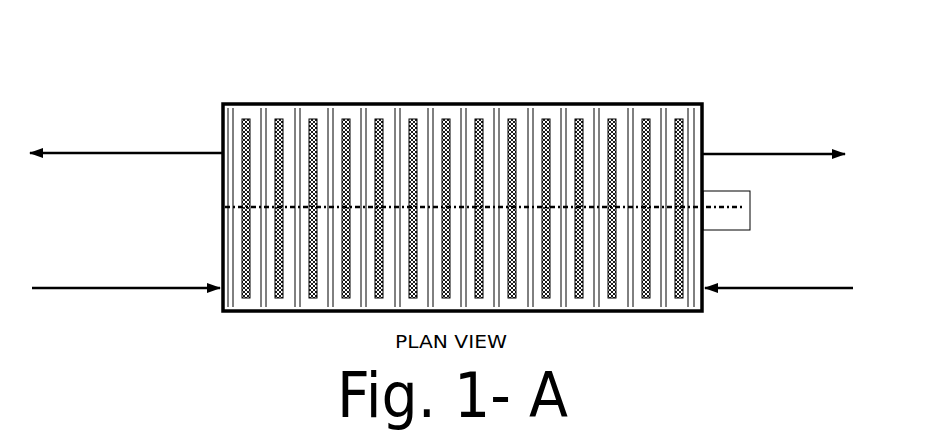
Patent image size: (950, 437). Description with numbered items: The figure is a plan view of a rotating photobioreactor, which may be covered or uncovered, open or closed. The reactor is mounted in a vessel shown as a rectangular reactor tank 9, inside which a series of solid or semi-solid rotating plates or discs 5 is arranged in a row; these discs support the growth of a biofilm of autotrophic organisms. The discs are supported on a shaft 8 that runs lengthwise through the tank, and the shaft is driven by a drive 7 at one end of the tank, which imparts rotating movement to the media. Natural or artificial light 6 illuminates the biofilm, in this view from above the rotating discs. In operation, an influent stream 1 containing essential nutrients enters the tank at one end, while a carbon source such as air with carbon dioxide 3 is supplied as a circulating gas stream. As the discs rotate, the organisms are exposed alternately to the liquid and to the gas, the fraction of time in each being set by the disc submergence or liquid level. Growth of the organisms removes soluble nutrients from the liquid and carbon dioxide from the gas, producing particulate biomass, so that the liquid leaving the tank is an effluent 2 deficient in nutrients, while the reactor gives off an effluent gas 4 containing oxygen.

The influent stream 1 is at (792, 274).
The effluent 2 is at (126, 136).
The carbon dioxide gas stream 3 is at (126, 273).
The effluent gas 4 is at (780, 142).
The rotating plates or discs 5 is at (448, 111).
The artificial light 6 is at (359, 313).
The drive 7 is at (770, 210).
The shaft 8 is at (432, 207).
The reactor tank 9 is at (530, 102).